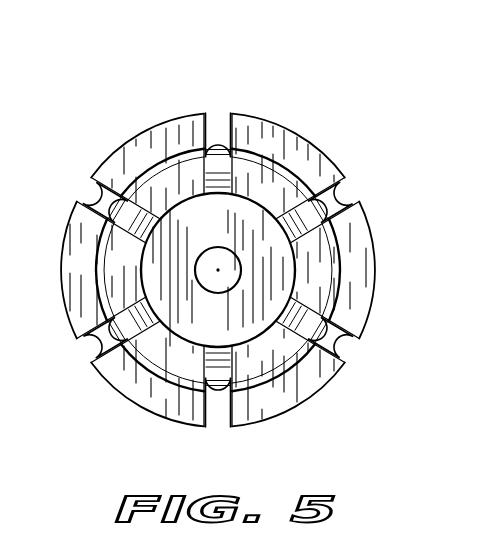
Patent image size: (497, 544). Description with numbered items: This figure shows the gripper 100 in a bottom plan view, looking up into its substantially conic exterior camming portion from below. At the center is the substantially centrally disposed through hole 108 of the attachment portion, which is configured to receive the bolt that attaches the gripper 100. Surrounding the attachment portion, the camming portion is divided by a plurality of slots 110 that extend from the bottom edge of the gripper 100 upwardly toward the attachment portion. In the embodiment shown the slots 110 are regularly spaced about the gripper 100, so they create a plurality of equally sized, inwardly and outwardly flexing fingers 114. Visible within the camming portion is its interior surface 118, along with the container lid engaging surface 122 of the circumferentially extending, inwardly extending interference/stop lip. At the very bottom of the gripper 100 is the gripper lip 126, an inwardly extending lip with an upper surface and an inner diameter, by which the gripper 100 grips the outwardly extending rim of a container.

The gripper 100 is at (274, 46).
The through hole 108 is at (224, 254).
The slots 110 is at (86, 196).
The fingers 114 is at (158, 118).
The interior surface 118 is at (154, 172).
The container lid engaging surface 122 is at (257, 172).
The gripper lip 126 is at (147, 392).